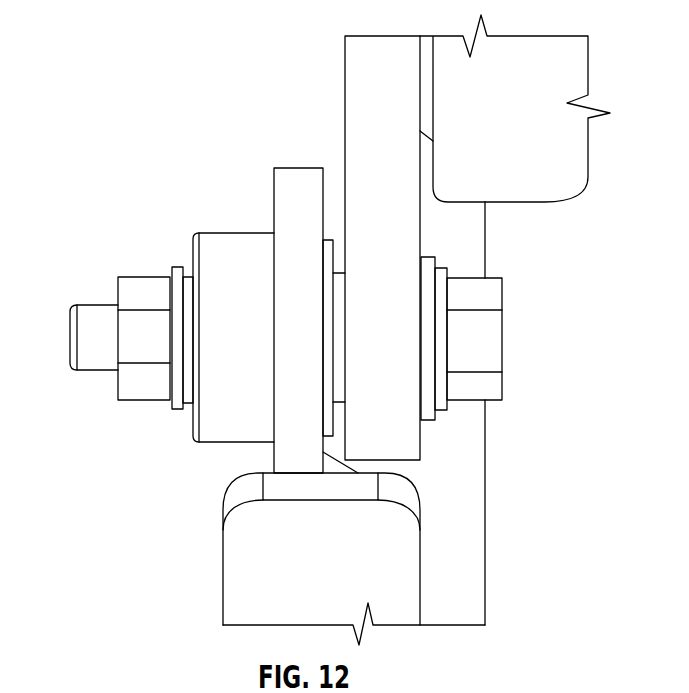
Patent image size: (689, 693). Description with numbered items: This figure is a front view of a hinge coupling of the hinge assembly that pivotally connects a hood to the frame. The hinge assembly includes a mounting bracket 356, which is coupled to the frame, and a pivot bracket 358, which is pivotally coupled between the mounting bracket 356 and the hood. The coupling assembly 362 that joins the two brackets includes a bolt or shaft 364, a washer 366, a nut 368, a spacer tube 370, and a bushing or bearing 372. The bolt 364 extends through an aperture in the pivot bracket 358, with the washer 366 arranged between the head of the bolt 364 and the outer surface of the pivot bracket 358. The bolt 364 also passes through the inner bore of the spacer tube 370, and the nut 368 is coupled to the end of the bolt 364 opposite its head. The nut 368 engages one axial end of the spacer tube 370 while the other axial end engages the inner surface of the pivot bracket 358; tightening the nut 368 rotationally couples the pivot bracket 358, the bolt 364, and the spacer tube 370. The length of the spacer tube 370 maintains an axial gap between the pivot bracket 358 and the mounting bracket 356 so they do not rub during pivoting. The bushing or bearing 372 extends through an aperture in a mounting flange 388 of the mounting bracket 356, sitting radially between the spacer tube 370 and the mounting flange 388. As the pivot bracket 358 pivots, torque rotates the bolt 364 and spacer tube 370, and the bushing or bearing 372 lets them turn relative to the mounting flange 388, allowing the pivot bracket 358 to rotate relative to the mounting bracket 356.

The mounting bracket 356 is at (243, 590).
The pivot bracket 358 is at (357, 57).
The coupling assembly 362 is at (580, 340).
The bolt 364 is at (88, 343).
The washer 366 is at (428, 292).
The nut 368 is at (147, 392).
The spacer tube 370 is at (186, 268).
The bushing or bearing 372 is at (328, 417).
The mounting flange 388 is at (258, 247).